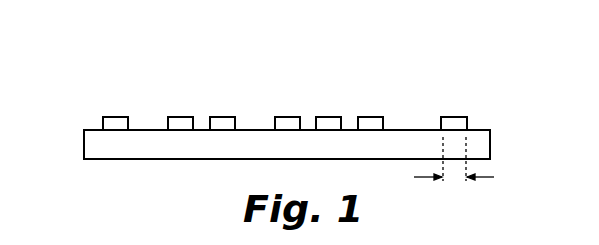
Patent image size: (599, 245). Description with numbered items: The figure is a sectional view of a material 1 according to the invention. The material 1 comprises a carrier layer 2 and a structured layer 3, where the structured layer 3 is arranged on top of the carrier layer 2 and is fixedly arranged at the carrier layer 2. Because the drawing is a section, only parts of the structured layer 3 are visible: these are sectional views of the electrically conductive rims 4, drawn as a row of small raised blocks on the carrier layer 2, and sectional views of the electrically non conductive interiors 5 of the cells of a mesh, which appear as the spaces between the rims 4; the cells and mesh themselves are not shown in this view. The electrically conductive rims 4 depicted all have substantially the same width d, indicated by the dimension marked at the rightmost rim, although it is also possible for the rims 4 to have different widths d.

The material 1 is at (308, 56).
The carrier layer 2 is at (92, 148).
The structured layer 3 is at (468, 123).
The electrically conductive rims 4 is at (112, 117).
The electrically non conductive interiors 5 is at (148, 130).
The width d is at (454, 162).